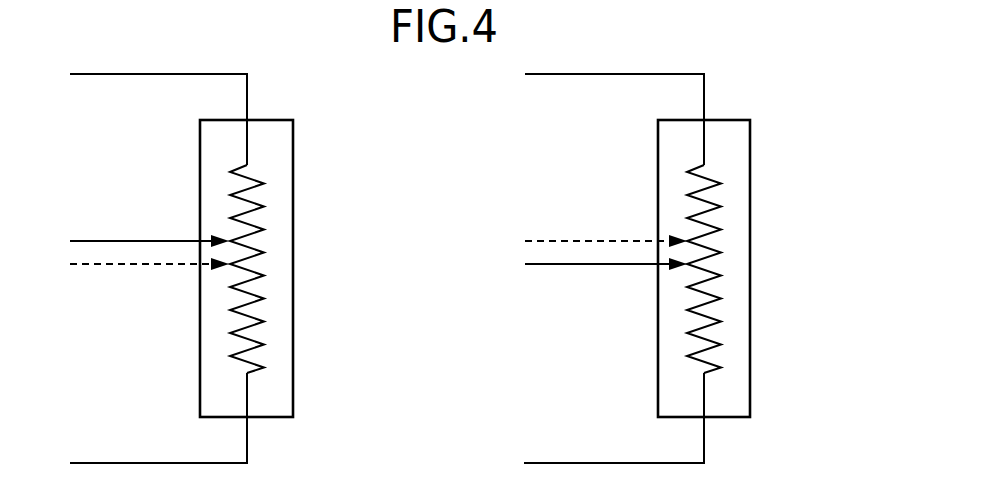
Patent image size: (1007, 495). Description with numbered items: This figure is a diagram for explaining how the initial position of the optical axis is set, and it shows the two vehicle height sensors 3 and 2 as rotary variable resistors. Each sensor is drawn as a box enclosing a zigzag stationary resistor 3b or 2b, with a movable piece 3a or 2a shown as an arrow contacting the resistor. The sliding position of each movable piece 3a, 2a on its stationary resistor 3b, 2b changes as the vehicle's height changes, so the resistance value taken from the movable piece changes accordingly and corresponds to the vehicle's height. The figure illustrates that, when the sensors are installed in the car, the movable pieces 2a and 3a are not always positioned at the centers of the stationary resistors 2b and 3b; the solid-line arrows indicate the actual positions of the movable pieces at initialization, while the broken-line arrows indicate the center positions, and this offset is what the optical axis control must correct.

The vehicle's height sensor 2 is at (750, 166).
The movable piece 2a is at (662, 247).
The stationary resistor 2b is at (721, 247).
The vehicle's height sensor 3 is at (293, 166).
The movable piece 3a is at (222, 244).
The stationary resistor 3b is at (265, 247).